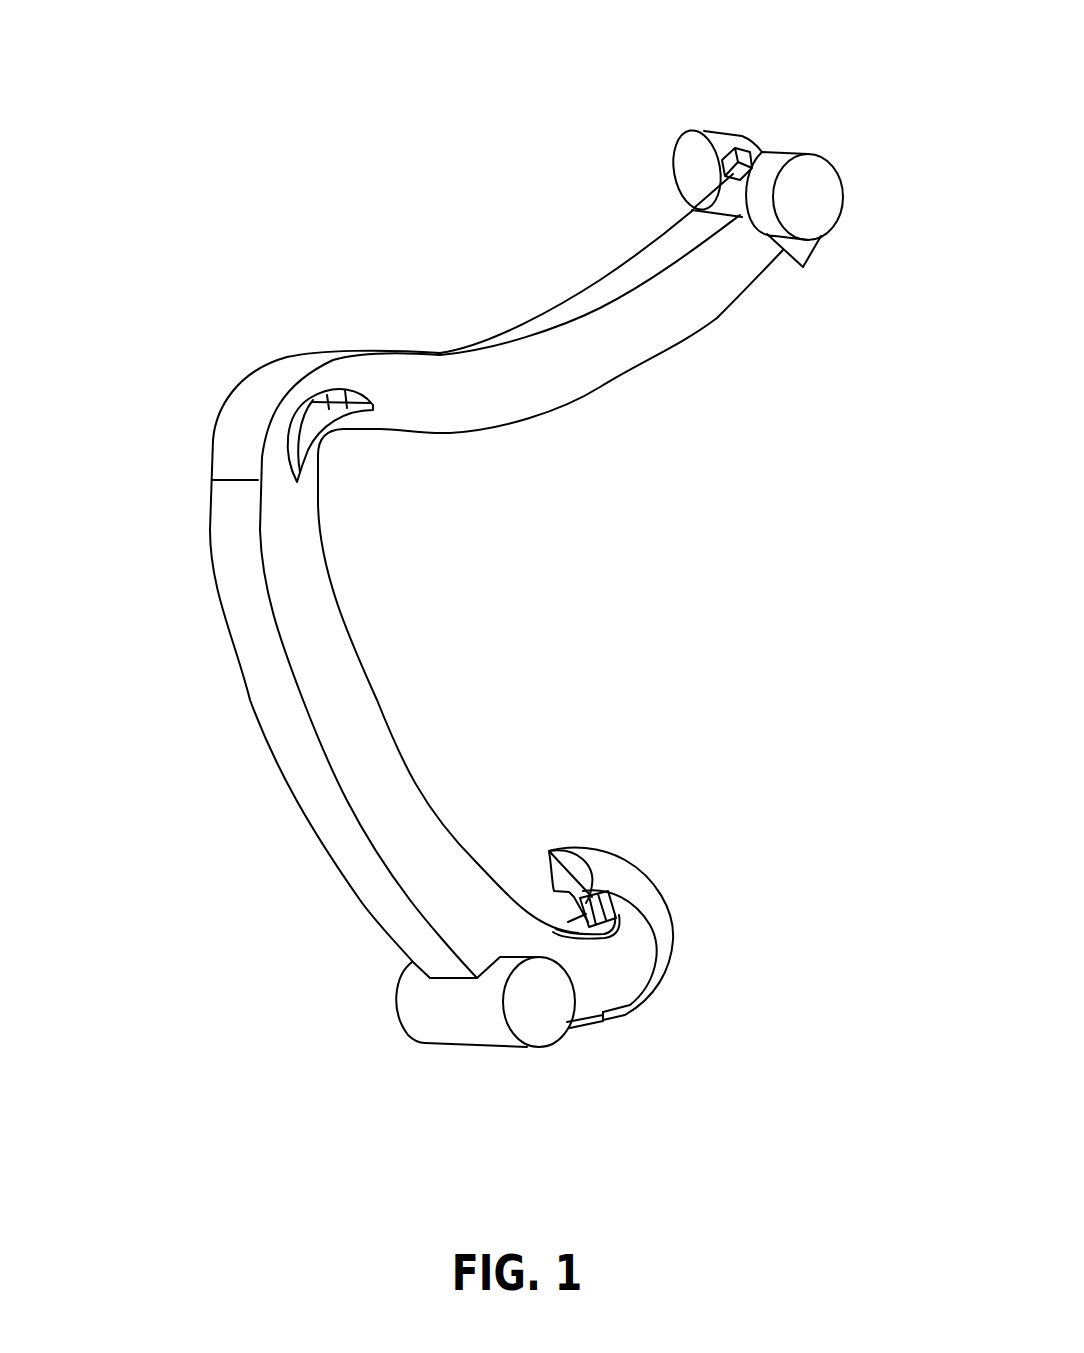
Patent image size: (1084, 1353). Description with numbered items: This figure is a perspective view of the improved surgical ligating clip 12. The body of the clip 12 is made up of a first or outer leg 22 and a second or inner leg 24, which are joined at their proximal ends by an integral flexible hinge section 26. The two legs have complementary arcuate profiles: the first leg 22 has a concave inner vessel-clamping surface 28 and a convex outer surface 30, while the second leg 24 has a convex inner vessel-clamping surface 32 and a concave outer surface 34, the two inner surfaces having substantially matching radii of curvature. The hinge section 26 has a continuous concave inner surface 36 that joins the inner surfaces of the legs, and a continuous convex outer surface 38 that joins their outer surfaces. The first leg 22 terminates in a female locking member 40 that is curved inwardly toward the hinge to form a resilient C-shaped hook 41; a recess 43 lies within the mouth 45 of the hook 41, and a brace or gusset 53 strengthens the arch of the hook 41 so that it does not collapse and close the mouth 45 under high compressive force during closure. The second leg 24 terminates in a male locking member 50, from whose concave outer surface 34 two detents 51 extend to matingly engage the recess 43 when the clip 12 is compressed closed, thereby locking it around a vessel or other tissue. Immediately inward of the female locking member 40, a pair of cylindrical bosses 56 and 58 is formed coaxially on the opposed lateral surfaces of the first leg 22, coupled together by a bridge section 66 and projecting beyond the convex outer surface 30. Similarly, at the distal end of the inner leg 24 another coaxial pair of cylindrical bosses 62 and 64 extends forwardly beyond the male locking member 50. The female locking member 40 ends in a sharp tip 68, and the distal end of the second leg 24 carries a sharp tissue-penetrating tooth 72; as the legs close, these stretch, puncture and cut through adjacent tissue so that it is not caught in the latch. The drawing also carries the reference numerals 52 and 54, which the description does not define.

The clip 12 is at (348, 260).
The first or outer leg 22 is at (347, 757).
The second or inner leg 24 is at (618, 350).
The flexible hinge section 26 is at (233, 362).
The concave inner vessel-clamping surface 28 is at (377, 700).
The convex outer surface 30 is at (243, 618).
The convex inner vessel-clamping surface 32 is at (717, 323).
The concave outer surface 34 is at (575, 312).
The concave inner surface 36 is at (322, 446).
The convex outer surface 38 is at (247, 411).
The female locking member 40 is at (705, 903).
The C-shaped hook 41 is at (627, 873).
The recess 43 is at (673, 940).
The mouth 45 is at (625, 953).
The male locking member 50 is at (758, 112).
The detent 51 is at (755, 142).
The front face 52 is at (351, 716).
The gusset 53 is at (578, 928).
The side surface 54 is at (250, 698).
The cylindrical boss 56 is at (395, 997).
The cylindrical boss 58 is at (540, 1019).
The cylindrical boss 62 is at (688, 176).
The cylindrical boss 64 is at (830, 199).
The bridge section 66 is at (468, 1018).
The sharp tip 68 is at (550, 852).
The tissue-penetrating tooth 72 is at (803, 267).